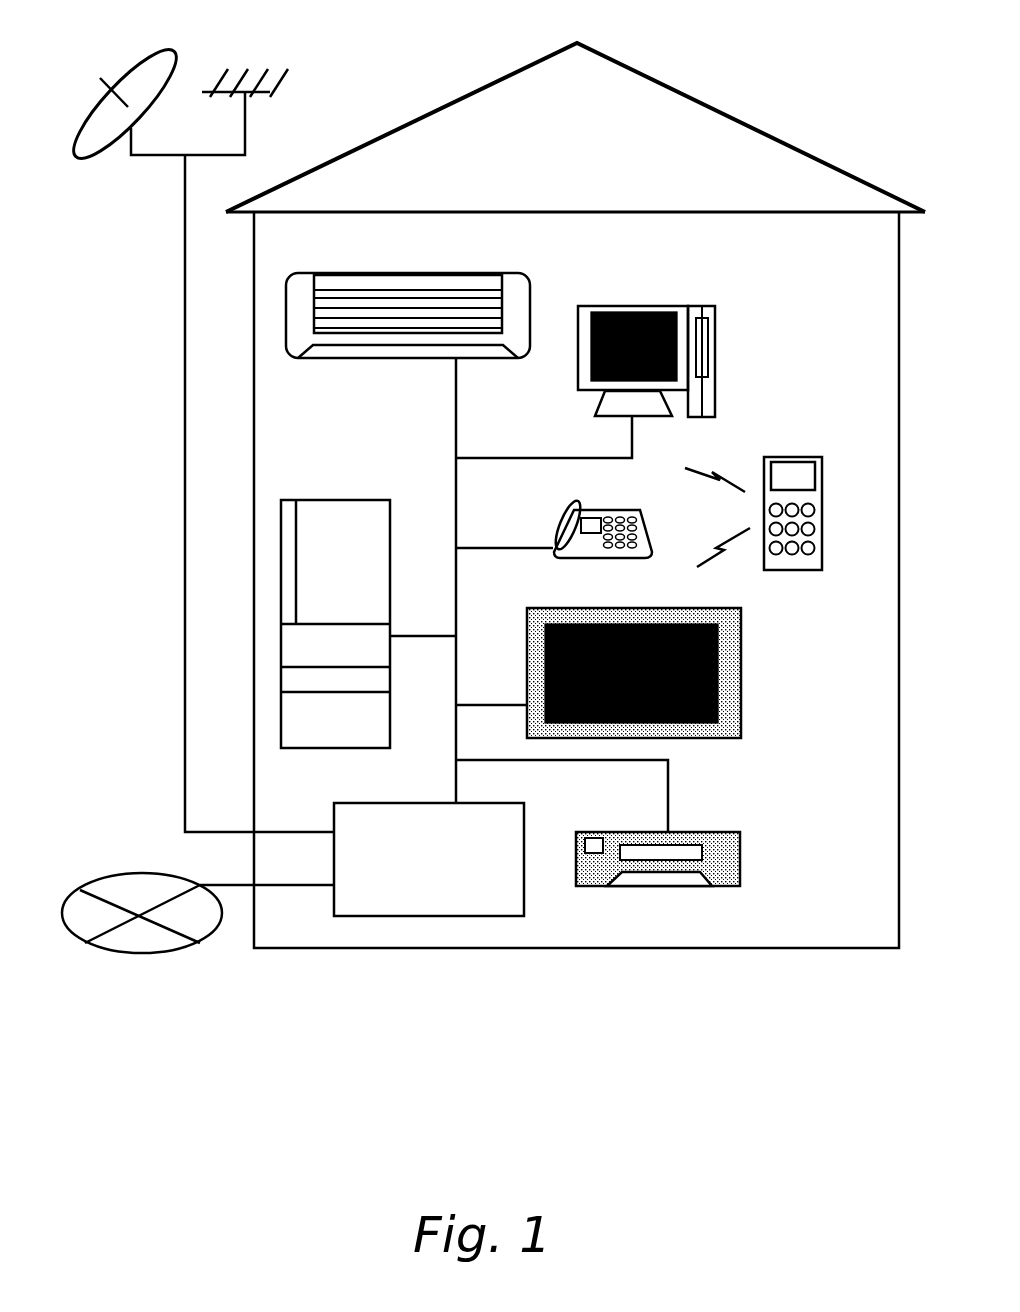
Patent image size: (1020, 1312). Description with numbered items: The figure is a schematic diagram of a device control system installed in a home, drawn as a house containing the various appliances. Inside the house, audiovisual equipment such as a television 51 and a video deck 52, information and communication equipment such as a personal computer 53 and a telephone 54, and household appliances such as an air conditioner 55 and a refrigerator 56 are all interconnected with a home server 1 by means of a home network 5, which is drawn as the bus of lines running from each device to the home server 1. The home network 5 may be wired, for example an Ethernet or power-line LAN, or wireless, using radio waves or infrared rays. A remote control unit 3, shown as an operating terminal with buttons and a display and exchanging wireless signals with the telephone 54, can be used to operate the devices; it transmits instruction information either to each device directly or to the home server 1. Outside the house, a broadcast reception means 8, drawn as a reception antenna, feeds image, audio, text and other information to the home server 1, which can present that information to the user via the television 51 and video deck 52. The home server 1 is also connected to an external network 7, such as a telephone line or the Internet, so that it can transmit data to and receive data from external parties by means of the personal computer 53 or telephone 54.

The home server 1 is at (434, 916).
The remote control unit 3 is at (822, 505).
The home network 5 is at (446, 398).
The external network 7 is at (88, 868).
The broadcast reception means 8 is at (128, 182).
The television 51 is at (741, 684).
The video deck 52 is at (740, 856).
The personal computer 53 is at (683, 302).
The telephone 54 is at (644, 510).
The air conditioner 55 is at (492, 270).
The refrigerator 56 is at (381, 498).